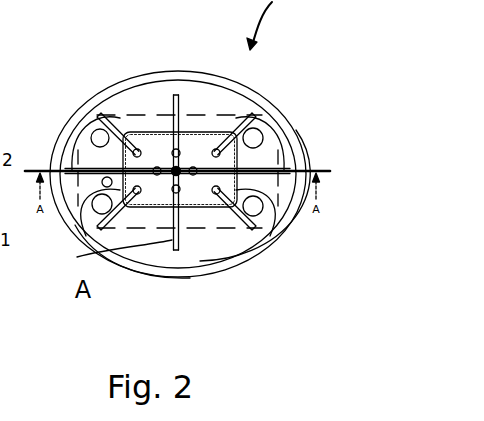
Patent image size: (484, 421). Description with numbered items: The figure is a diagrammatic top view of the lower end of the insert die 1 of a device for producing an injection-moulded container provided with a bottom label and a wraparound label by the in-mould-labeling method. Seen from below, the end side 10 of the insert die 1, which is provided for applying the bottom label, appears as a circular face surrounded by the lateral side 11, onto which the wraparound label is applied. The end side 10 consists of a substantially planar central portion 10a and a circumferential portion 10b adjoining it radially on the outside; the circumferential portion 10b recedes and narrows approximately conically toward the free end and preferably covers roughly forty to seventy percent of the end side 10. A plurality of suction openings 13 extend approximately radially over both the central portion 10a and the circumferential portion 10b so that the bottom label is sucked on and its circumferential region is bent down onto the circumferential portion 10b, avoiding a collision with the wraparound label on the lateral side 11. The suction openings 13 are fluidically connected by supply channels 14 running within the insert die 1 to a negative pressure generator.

The insert die 1 is at (267, 25).
The end side 10 is at (148, 92).
The central portion 10a is at (193, 100).
The circumferential portion 10b is at (153, 143).
The lateral side 11 is at (236, 84).
The suction openings 13 is at (174, 112).
The supply channels 14 is at (98, 146).